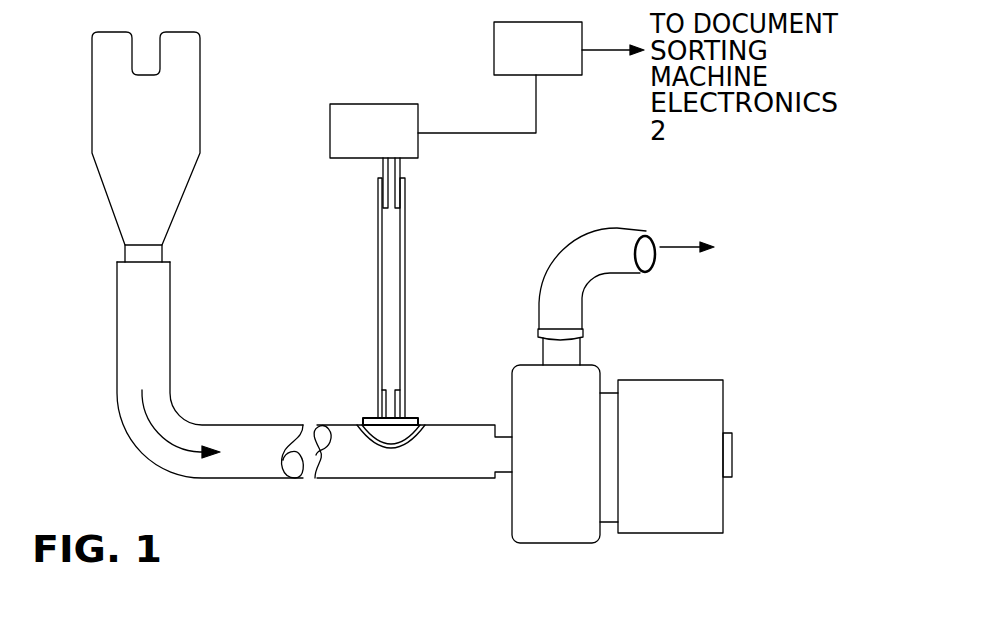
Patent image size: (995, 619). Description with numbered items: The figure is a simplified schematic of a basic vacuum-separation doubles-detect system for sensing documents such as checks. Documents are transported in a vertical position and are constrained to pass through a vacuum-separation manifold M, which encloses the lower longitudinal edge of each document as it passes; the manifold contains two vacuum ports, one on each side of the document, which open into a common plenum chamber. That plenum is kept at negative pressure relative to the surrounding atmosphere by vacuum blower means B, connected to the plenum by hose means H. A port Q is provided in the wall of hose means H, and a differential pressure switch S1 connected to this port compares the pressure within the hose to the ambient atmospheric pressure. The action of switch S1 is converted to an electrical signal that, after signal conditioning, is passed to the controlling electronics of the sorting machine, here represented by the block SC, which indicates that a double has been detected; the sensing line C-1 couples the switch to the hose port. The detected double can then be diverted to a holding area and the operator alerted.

The vacuum-separation manifold M is at (98, 95).
The hose means H is at (255, 467).
The sensor probe cable C-1 is at (405, 225).
The port Q is at (380, 420).
The differential pressure switch S1 is at (348, 157).
The sorting controller SC is at (498, 53).
The vacuum blower means B is at (522, 508).